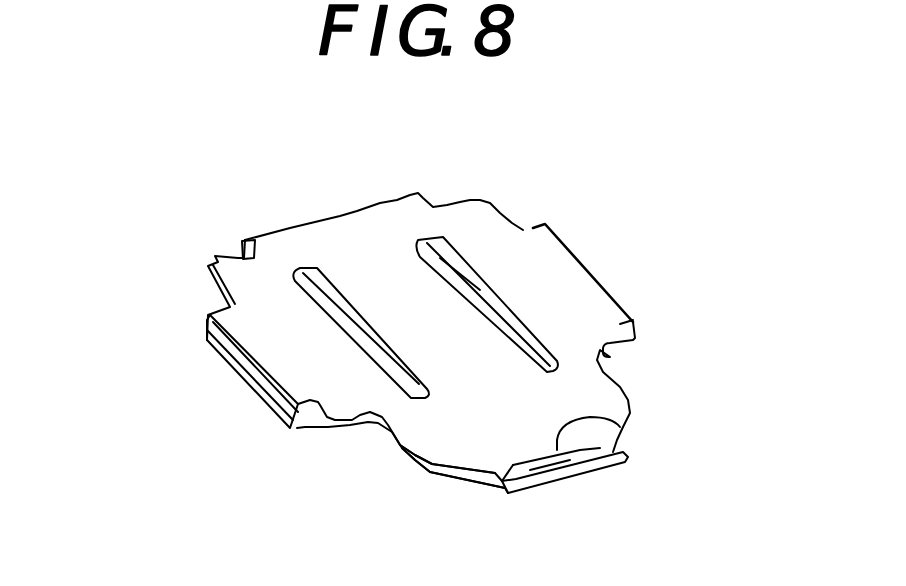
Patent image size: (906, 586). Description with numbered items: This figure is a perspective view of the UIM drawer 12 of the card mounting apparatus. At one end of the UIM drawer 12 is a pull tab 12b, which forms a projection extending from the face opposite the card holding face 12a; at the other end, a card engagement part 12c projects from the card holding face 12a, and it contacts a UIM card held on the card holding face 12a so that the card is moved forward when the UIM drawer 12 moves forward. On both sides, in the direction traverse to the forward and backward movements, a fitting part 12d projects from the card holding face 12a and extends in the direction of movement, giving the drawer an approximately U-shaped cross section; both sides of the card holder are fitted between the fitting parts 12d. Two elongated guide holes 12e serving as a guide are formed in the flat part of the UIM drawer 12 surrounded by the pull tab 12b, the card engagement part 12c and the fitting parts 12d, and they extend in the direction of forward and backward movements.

The UIM drawer 12 is at (583, 267).
The card holding face 12a is at (395, 448).
The pull tab 12b is at (633, 424).
The card engagement part 12c is at (240, 256).
The fitting part 12d is at (247, 371).
The elongated guide holes 12e is at (462, 292).